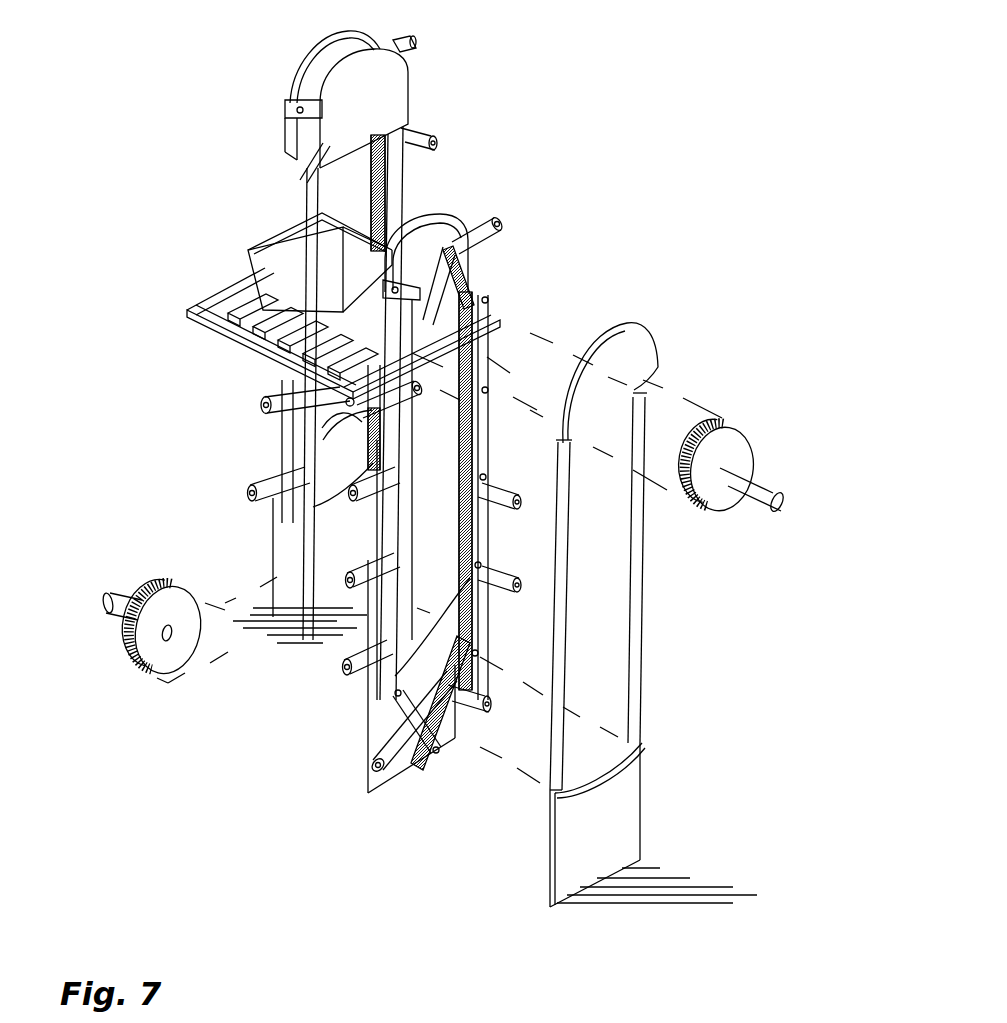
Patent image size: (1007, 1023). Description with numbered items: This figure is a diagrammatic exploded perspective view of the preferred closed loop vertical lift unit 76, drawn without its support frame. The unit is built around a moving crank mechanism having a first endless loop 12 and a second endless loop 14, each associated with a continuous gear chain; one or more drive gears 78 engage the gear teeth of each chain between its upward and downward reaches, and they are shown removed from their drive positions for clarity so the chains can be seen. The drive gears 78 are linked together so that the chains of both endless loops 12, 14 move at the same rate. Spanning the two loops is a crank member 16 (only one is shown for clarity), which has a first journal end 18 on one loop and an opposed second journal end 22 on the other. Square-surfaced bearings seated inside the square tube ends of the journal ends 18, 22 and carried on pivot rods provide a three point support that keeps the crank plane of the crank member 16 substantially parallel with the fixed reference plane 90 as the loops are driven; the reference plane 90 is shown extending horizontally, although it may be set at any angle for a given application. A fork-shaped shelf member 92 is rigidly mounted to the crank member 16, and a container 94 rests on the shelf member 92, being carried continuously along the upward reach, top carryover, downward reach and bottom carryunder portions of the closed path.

The first endless loop 12 is at (343, 738).
The second endless loop 14 is at (250, 117).
The crank member 16 is at (206, 331).
The first journal end 18 is at (295, 424).
The second journal end 22 is at (264, 238).
The closed loop vertical lift unit 76 is at (680, 205).
The drive gear 78 is at (170, 590).
The fixed reference plane 90 is at (680, 884).
The fork-shaped shelf member 92 is at (243, 312).
The container 94 is at (366, 262).